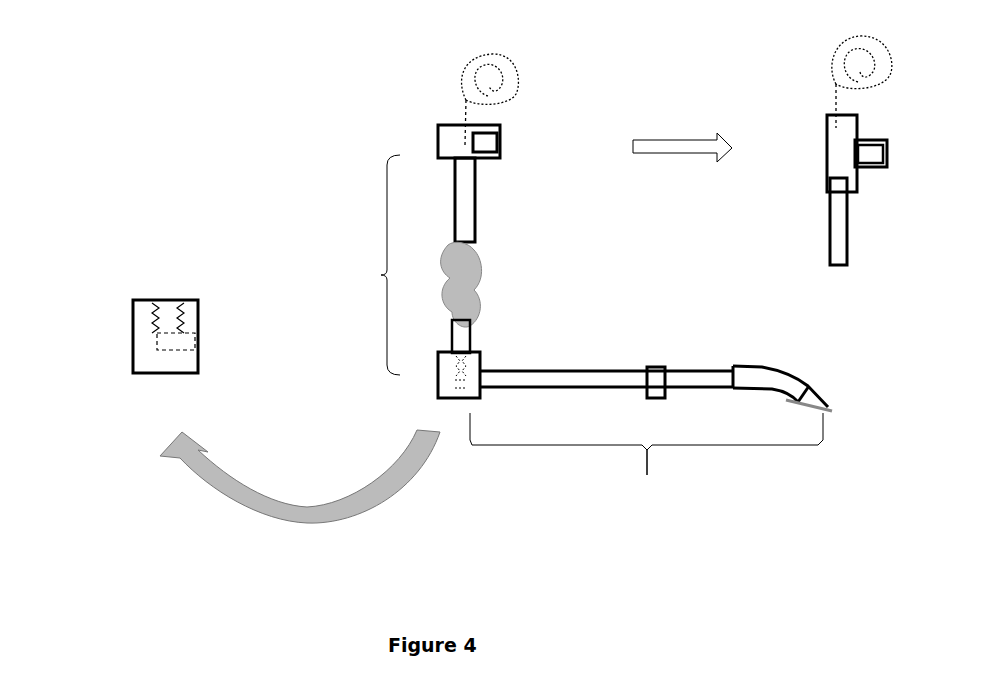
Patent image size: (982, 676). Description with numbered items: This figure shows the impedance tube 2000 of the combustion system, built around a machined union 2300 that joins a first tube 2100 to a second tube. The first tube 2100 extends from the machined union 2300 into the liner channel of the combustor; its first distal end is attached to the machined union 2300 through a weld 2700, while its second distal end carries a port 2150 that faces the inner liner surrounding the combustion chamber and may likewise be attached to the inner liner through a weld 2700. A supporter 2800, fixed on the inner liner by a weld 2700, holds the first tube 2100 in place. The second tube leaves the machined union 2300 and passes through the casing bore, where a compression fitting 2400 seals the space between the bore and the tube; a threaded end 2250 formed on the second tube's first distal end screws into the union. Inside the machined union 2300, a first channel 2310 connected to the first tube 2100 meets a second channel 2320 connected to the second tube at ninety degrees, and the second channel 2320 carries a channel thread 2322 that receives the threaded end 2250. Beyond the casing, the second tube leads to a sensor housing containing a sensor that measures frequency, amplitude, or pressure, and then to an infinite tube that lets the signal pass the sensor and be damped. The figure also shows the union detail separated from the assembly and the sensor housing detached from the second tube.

The impedance tube 2000 is at (240, 58).
The first tube 2100 is at (646, 437).
The port 2150 is at (817, 389).
The threaded end 2250 is at (454, 368).
The machined union 2300 is at (452, 412).
The first channel 2310 is at (186, 351).
The second channel 2320 is at (168, 303).
The channel thread 2322 is at (188, 306).
The compression fitting 2400 is at (485, 258).
The weld 2700 is at (486, 366).
The supporter 2800 is at (667, 368).